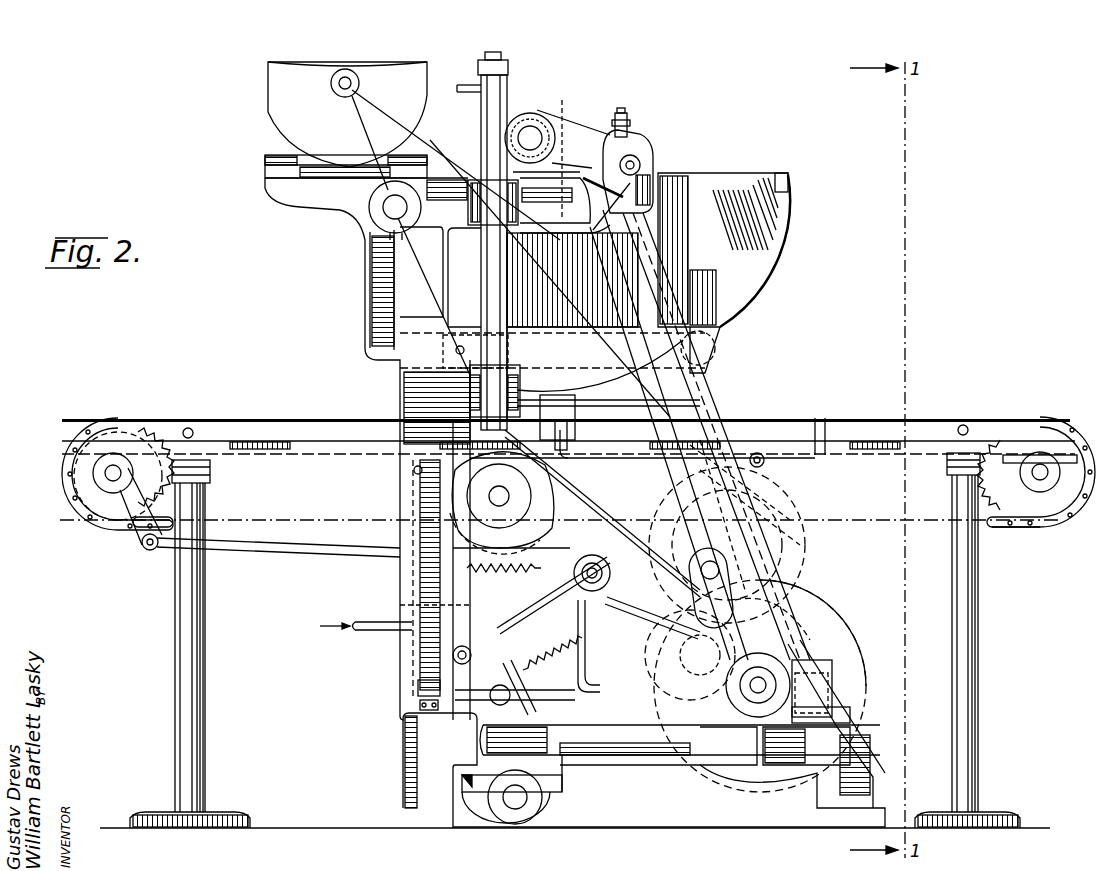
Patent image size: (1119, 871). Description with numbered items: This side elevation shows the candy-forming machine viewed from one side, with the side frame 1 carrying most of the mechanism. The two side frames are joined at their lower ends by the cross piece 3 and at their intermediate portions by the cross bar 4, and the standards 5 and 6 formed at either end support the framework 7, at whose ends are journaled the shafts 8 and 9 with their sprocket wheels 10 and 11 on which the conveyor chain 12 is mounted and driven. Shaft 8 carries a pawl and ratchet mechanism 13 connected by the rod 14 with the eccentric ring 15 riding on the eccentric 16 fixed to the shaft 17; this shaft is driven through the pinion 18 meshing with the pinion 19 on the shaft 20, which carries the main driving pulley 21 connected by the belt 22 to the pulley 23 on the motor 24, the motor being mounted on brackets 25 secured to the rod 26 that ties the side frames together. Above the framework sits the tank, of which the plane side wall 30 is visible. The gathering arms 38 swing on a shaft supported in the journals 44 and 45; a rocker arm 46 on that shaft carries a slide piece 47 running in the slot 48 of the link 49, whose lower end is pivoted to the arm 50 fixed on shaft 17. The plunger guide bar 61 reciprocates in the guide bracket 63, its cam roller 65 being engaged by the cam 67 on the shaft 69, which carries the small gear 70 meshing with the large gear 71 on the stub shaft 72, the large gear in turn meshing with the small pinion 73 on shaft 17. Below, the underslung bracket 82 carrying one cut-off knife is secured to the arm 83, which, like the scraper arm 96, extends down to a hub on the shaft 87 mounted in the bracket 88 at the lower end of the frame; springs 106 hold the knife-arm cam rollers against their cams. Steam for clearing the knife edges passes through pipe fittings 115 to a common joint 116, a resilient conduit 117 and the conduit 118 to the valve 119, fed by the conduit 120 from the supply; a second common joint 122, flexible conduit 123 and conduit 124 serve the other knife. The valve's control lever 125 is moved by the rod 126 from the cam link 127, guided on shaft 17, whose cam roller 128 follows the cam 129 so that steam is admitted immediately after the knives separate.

The side frame 1 is at (575, 500).
The cross piece 3 is at (833, 673).
The cross bar 4 is at (766, 462).
The standard 5 is at (190, 610).
The standard 6 is at (977, 585).
The framework 7 is at (862, 440).
The shaft 8 is at (108, 484).
The shaft 9 is at (1040, 480).
The sprocket wheel 10 is at (160, 481).
The sprocket wheel 11 is at (1032, 474).
The conveyor chain 12 is at (1042, 527).
The pawl and ratchet mechanism 13 is at (95, 490).
The rod 14 is at (240, 548).
The eccentric ring 15 is at (778, 518).
The eccentric 16 is at (790, 535).
The shaft 17 is at (751, 515).
The pinion 18 is at (787, 653).
The pinion 19 is at (770, 670).
The shaft 20 is at (753, 683).
The main driving pulley 21 is at (866, 684).
The belt 22 is at (432, 152).
The pulley 23 is at (331, 83).
The motor 24 is at (346, 120).
The bracket 25 is at (346, 190).
The rod 26 is at (384, 213).
The side wall 30 is at (724, 273).
The gathering arm 38 is at (632, 435).
The journal 44 is at (572, 126).
The journal 45 is at (535, 136).
The rocker arm 46 is at (582, 143).
The slide piece 47 is at (641, 152).
The slot 48 is at (655, 182).
The link 49 is at (652, 238).
The arm 50 is at (800, 560).
The guide bar 61 is at (494, 260).
The guide bracket 63 is at (468, 378).
The cam roller 65 is at (440, 470).
The cam 67 is at (466, 500).
The shaft 69 is at (448, 526).
The small gear 70 is at (420, 565).
The large gear 71 is at (418, 593).
The stub shaft 72 is at (511, 592).
The small pinion 73 is at (602, 513).
The underslung bracket 82 is at (566, 422).
The arm 83 is at (615, 597).
The shaft 87 is at (543, 798).
The bracket 88 is at (547, 780).
The arm 96 is at (504, 578).
The spring 106 is at (544, 595).
The pipe fitting 115 is at (575, 430).
The common joint 116 is at (642, 466).
The resilient conduit 117 is at (588, 668).
The conduit 118 is at (582, 690).
The valve 119 is at (470, 657).
The conduit 120 is at (385, 632).
The common joint 122 is at (400, 482).
The flexible conduit 123 is at (400, 605).
The conduit 124 is at (418, 706).
The control lever 125 is at (418, 688).
The rod 126 is at (690, 655).
The cam link 127 is at (711, 600).
The cam roller 128 is at (830, 520).
The cam 129 is at (702, 655).